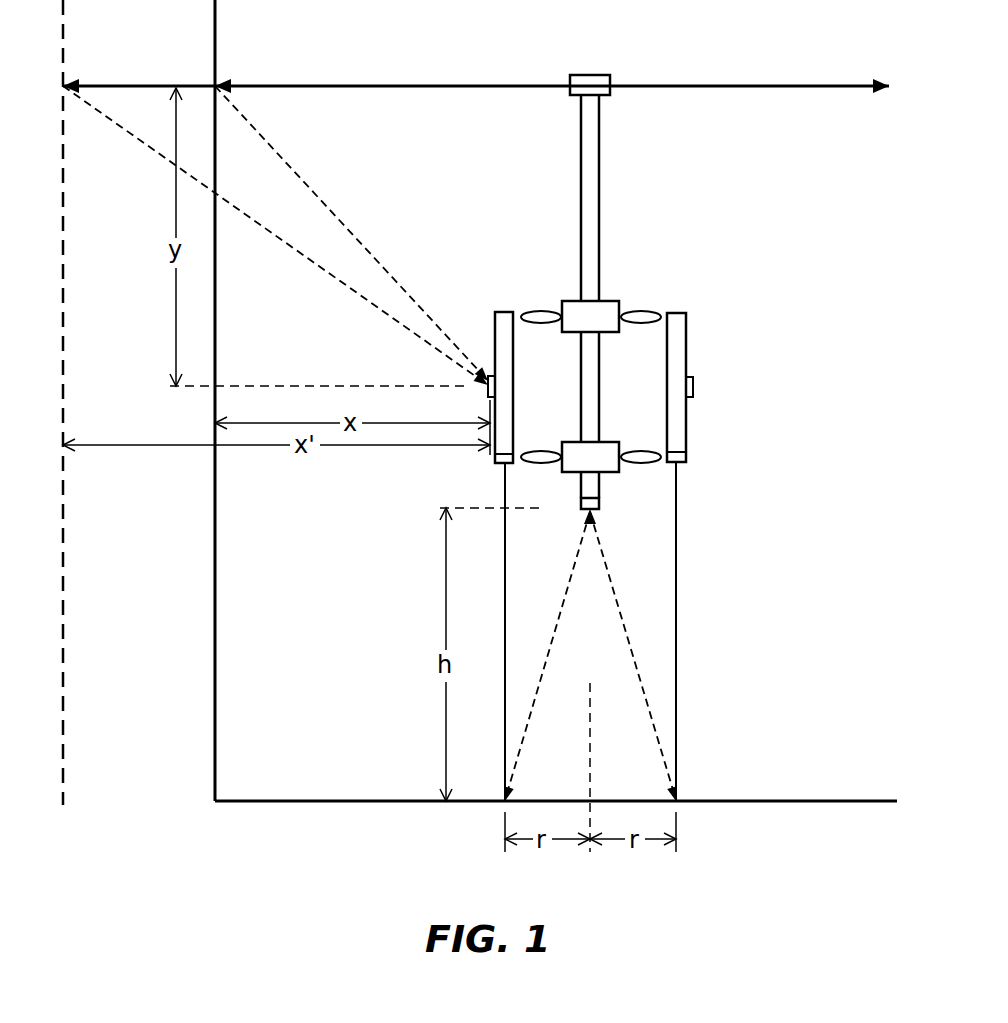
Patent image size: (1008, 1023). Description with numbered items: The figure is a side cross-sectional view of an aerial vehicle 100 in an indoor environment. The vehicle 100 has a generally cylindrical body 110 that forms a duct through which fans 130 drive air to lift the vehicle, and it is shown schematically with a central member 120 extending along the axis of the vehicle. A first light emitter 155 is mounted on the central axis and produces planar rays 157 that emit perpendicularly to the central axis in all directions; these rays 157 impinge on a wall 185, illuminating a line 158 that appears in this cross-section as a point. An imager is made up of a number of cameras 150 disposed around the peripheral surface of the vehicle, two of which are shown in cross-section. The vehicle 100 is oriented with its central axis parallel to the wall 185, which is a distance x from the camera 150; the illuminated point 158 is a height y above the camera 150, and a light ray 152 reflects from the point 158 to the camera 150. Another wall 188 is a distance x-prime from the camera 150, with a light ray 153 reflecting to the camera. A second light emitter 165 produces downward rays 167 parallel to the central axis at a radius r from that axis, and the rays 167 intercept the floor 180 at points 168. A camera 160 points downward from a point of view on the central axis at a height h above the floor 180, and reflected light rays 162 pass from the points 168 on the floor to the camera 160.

The aerial vehicle 100 is at (745, 340).
The body 110 is at (497, 313).
The central member 120 is at (592, 163).
The fans 130 is at (541, 315).
The cameras 150 is at (488, 377).
The light ray 152 is at (340, 222).
The light ray 153 is at (282, 241).
The first light emitter 155 is at (588, 82).
The planar rays 157 is at (424, 85).
The illuminated line / point 158 is at (218, 80).
The camera 160 is at (598, 503).
The reflected light rays 162 is at (614, 592).
The second light emitter 165 is at (496, 463).
The downward rays 167 is at (505, 580).
The points 168 is at (505, 797).
The floor 180 is at (793, 803).
The wall 185 is at (215, 776).
The another wall 188 is at (64, 707).